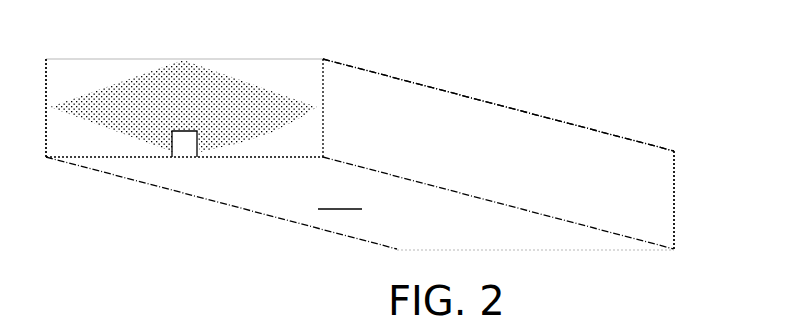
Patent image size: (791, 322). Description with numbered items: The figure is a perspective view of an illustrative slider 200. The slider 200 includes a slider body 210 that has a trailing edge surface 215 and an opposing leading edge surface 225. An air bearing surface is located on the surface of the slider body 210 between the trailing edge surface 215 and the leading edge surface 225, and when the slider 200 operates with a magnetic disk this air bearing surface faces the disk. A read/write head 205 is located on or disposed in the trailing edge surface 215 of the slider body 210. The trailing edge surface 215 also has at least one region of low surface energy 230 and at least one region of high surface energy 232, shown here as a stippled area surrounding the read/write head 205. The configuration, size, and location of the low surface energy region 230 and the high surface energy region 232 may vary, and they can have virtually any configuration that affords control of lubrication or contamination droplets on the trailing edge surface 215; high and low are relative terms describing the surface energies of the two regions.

The slider 200 is at (511, 91).
The read/write head 205 is at (185, 157).
The slider body 210 is at (527, 156).
The trailing edge surface 215 is at (108, 140).
The leading edge surface 225 is at (676, 212).
The region of low surface energy 230 is at (232, 97).
The region of high surface energy 232 is at (118, 78).